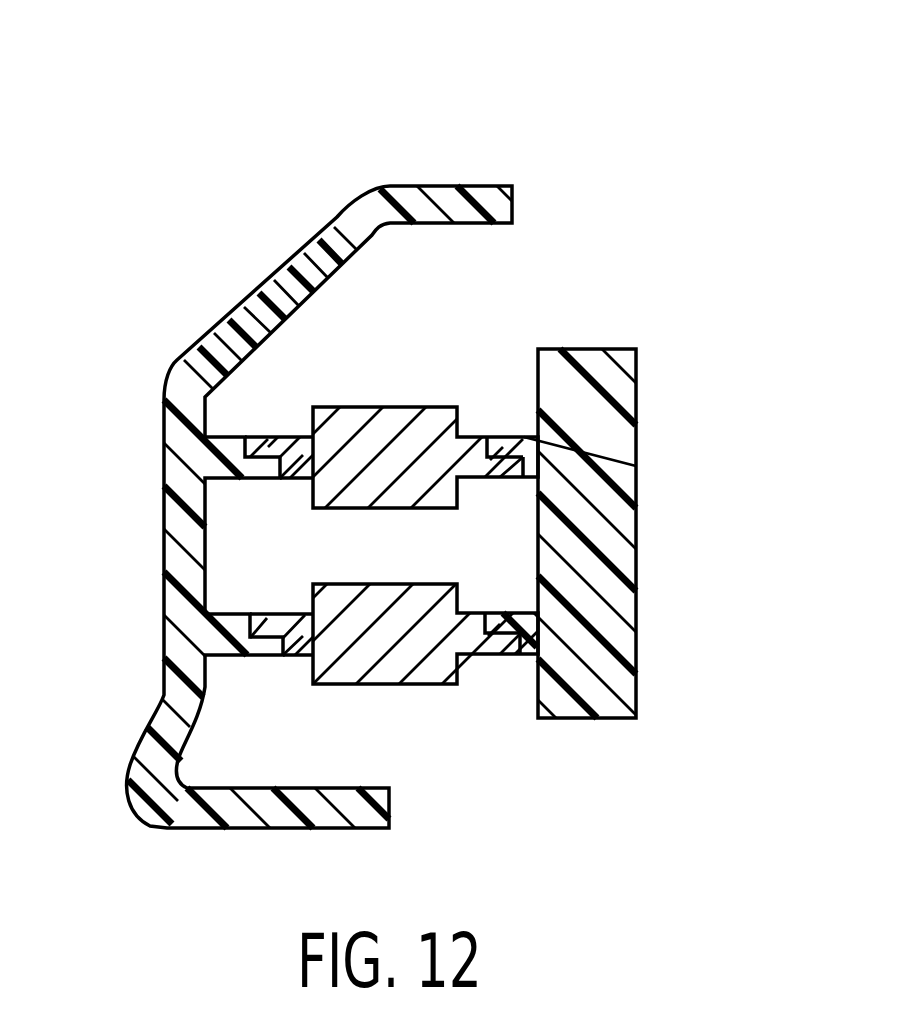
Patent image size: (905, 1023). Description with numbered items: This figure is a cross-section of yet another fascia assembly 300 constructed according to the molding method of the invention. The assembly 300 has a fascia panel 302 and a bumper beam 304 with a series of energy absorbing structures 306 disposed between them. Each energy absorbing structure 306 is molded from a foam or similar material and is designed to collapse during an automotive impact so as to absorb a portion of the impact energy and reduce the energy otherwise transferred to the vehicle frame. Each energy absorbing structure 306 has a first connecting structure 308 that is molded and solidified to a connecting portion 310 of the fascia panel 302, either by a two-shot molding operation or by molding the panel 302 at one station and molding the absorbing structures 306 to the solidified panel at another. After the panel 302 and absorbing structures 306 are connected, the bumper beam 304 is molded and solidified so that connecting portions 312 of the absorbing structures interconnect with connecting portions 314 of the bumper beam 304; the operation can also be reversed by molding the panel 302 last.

The fascia assembly 300 is at (702, 128).
The fascia panel 302 is at (232, 323).
The bumper beam 304 is at (623, 433).
The energy absorbing structure 306 is at (395, 417).
The first connecting structure 308 is at (265, 445).
The connecting portion 310 is at (262, 478).
The connecting portion 312 is at (503, 473).
The connecting portion 314 is at (508, 433).